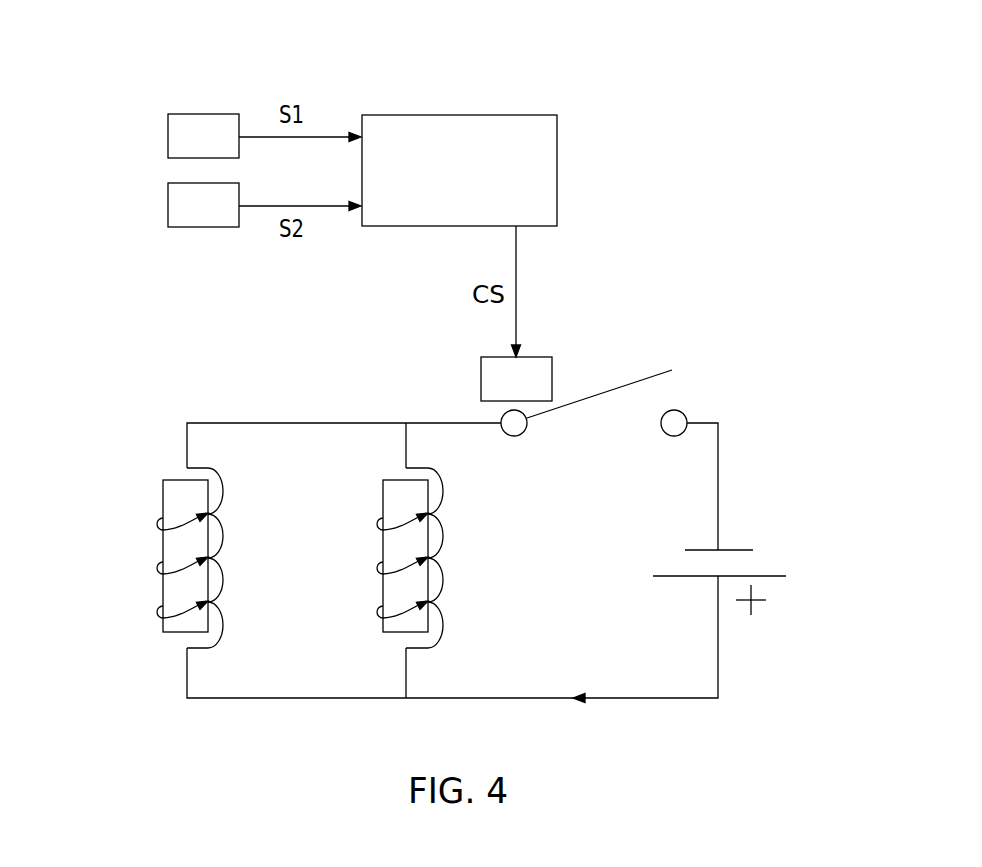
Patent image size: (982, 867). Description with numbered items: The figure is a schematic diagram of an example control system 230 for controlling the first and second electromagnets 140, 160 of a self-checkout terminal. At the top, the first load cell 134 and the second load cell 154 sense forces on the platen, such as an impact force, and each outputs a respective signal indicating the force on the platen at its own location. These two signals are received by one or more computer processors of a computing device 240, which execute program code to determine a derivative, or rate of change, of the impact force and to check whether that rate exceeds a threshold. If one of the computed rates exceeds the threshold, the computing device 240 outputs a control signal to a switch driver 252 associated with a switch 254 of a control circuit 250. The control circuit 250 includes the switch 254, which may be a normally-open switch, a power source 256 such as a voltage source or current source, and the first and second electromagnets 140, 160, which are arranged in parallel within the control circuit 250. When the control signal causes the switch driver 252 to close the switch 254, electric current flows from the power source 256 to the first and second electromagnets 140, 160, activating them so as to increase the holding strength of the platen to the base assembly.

The first load cell 134 is at (215, 114).
The second load cell 154 is at (195, 228).
The computing device 240 is at (485, 188).
The switch driver 252 is at (481, 380).
The switch 254 is at (603, 391).
The power source 256 is at (735, 550).
The control circuit 250 is at (165, 378).
The first electromagnet 140 is at (146, 549).
The second electromagnet 160 is at (366, 549).
The control system 230 is at (757, 63).